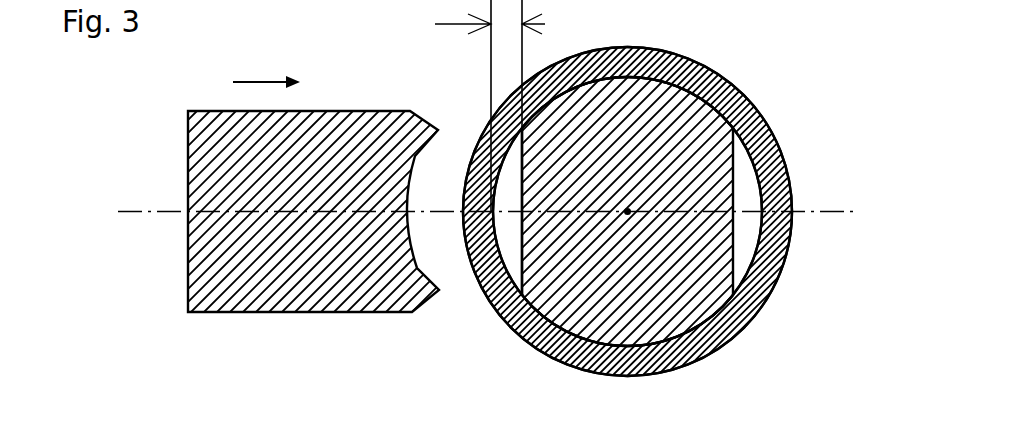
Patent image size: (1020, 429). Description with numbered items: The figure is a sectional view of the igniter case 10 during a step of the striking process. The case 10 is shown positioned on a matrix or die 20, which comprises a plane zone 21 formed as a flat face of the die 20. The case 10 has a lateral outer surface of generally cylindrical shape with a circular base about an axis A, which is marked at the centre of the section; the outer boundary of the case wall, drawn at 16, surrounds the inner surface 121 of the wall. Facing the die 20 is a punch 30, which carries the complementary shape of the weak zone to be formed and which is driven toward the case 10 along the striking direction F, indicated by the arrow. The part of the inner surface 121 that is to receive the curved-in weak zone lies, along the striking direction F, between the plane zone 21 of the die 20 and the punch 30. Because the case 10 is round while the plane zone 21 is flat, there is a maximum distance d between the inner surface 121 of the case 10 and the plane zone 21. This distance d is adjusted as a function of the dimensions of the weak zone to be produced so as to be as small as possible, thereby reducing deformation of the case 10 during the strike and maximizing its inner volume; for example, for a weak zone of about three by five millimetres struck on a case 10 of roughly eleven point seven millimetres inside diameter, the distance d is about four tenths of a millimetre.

The case 10 is at (745, 112).
The outer peripheral surface of tubular member 16 is at (708, 68).
The die 20 is at (688, 292).
The plane zone 21 is at (521, 192).
The inner surface 121 is at (492, 283).
The punch 30 is at (233, 275).
The axis A is at (628, 211).
The striking direction F is at (266, 71).
The maximum distance d is at (490, 106).